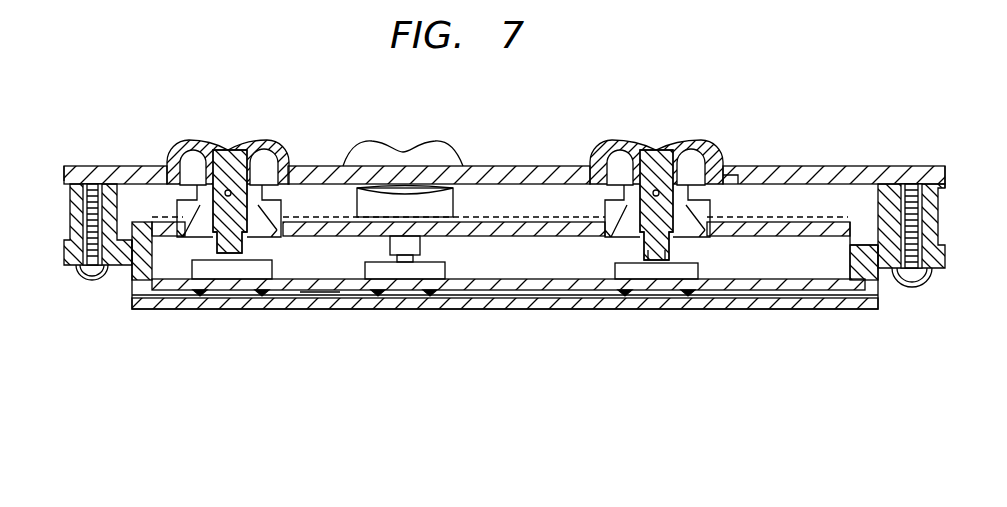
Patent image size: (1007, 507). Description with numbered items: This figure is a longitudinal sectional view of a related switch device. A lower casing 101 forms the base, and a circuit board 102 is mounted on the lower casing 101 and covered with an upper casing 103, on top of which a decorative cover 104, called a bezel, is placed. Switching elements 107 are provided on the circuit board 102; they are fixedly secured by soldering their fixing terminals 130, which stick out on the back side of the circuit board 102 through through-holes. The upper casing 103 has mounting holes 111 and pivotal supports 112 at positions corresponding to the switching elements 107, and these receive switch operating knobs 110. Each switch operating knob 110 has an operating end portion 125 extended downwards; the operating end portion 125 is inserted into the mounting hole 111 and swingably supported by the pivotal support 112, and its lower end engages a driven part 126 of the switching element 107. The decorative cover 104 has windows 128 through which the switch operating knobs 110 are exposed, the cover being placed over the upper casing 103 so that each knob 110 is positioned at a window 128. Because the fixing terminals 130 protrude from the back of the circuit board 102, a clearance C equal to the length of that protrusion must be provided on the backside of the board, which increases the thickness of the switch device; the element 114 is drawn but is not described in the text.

The lower casing 101 is at (135, 278).
The circuit board 102 is at (525, 284).
The upper casing 103 is at (544, 230).
The decorative cover 104 is at (506, 170).
The switching element 107 is at (677, 266).
The switch operating knob 110 is at (683, 230).
The mounting hole 111 is at (700, 210).
The pivotal support 112 is at (628, 163).
The right projecting portion 114 is at (690, 163).
The operating end portion 125 is at (645, 240).
The driven part 126 is at (654, 262).
The window 128 is at (737, 176).
The fixing terminal 130 is at (627, 292).
The clearance C is at (318, 293).